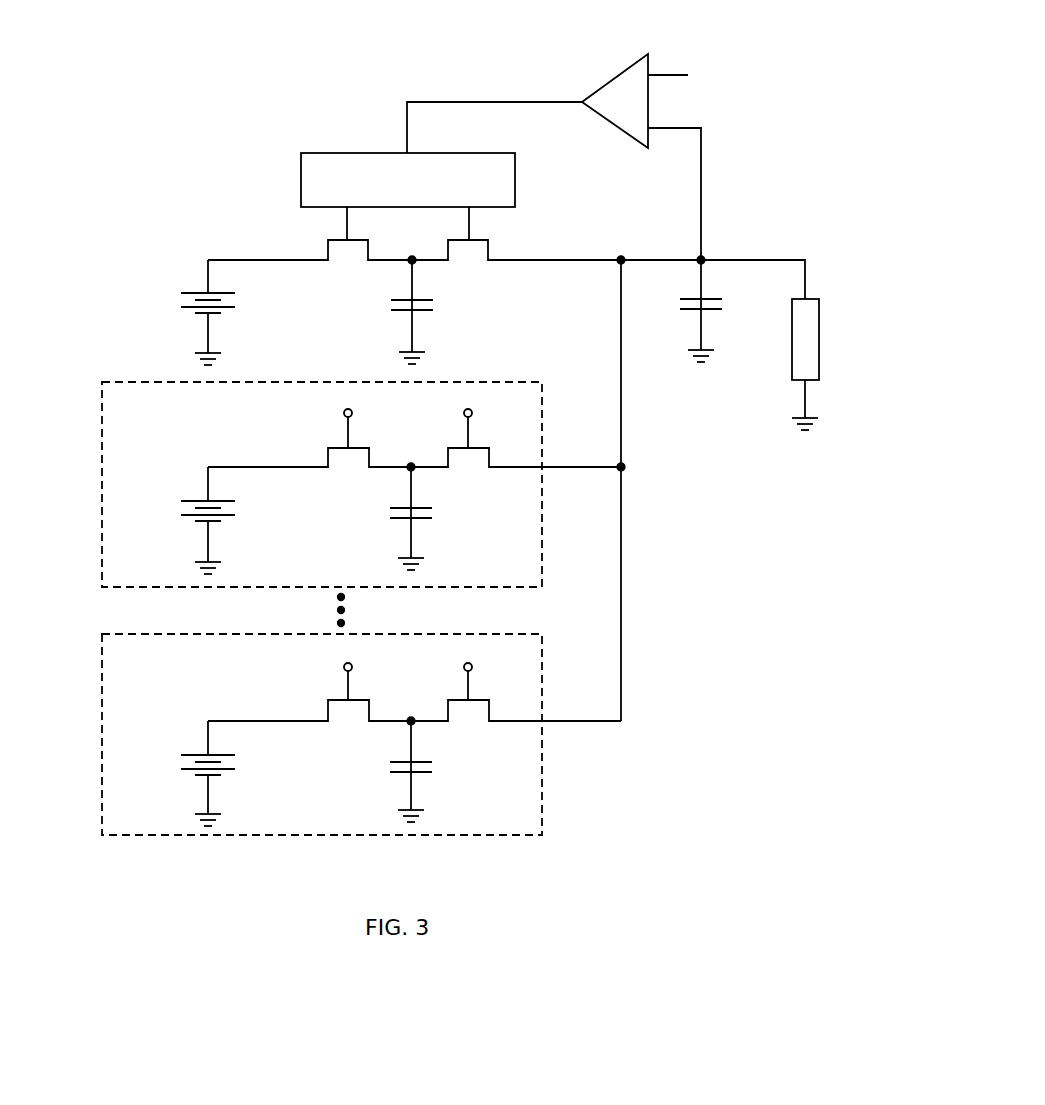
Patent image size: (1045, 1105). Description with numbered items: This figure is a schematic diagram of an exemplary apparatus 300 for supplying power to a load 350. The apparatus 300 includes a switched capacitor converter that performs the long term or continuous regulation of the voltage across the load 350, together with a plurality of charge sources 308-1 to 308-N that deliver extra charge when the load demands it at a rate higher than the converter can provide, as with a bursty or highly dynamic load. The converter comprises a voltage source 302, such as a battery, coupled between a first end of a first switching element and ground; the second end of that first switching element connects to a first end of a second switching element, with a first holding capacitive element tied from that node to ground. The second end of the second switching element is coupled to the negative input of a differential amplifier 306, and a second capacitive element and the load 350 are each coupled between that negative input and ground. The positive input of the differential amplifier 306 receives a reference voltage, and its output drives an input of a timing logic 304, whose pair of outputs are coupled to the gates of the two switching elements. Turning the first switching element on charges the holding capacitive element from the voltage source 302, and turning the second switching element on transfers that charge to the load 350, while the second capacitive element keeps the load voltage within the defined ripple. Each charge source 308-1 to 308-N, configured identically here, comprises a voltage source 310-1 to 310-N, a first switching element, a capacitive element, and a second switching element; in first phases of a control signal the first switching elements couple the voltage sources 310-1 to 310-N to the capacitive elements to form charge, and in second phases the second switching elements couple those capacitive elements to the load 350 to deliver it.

The apparatus 300 is at (233, 72).
The voltage source 302 is at (196, 291).
The timing logic 304 is at (343, 153).
The differential amplifier 306 is at (619, 76).
The charge source 308-1 is at (102, 487).
The charge source 308-N is at (102, 730).
The voltage source 310-1 is at (195, 500).
The voltage source 310-N is at (195, 754).
The load 350 is at (813, 297).